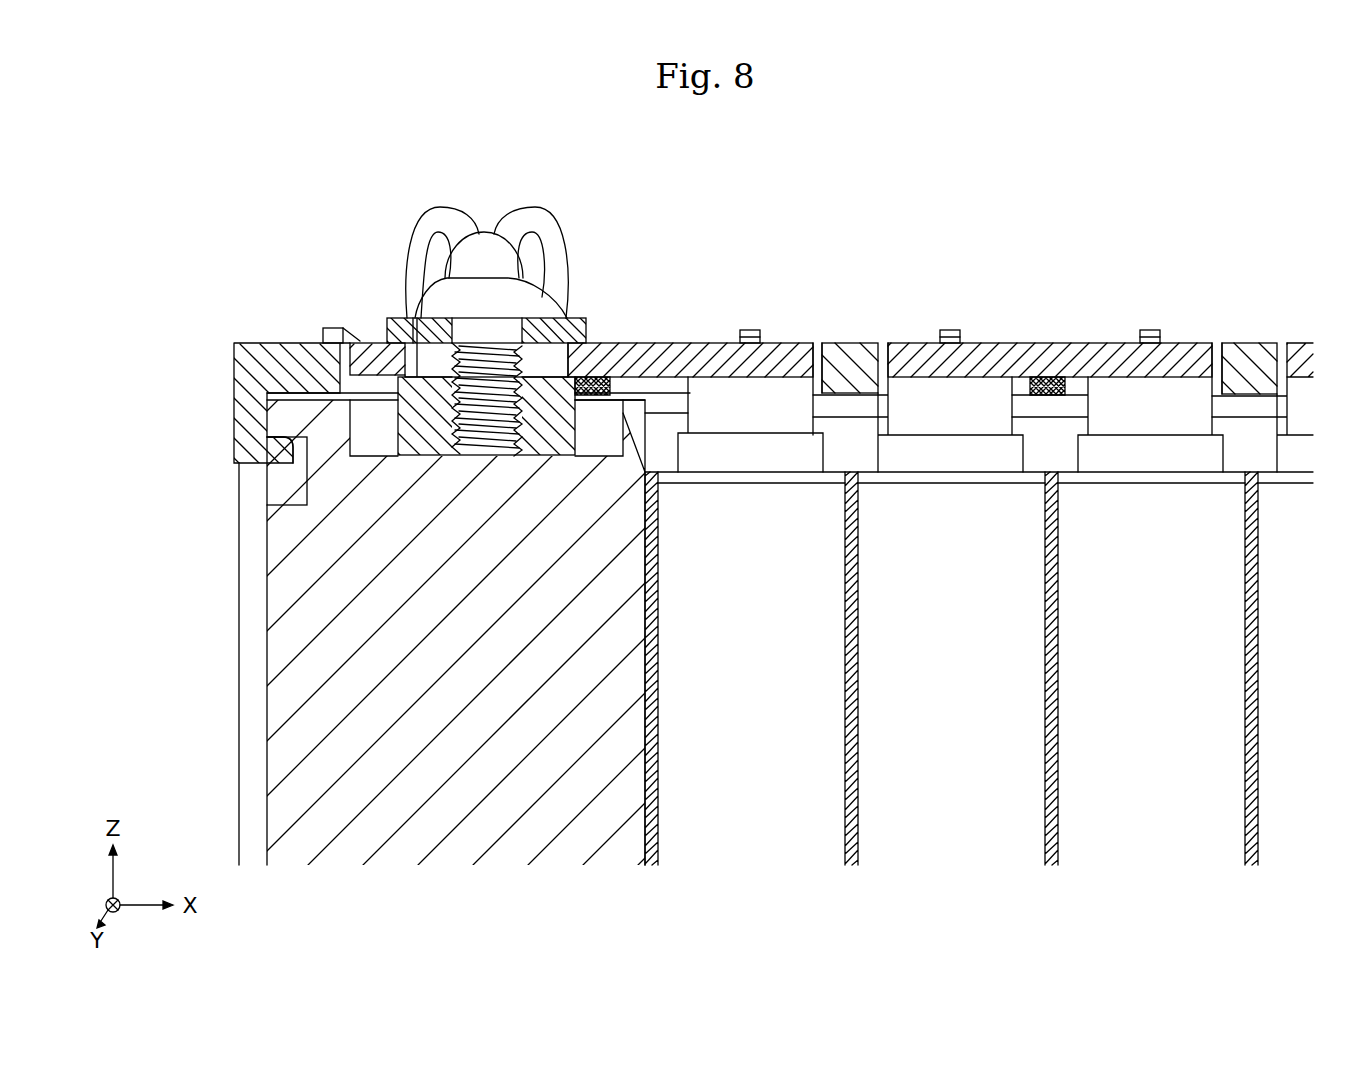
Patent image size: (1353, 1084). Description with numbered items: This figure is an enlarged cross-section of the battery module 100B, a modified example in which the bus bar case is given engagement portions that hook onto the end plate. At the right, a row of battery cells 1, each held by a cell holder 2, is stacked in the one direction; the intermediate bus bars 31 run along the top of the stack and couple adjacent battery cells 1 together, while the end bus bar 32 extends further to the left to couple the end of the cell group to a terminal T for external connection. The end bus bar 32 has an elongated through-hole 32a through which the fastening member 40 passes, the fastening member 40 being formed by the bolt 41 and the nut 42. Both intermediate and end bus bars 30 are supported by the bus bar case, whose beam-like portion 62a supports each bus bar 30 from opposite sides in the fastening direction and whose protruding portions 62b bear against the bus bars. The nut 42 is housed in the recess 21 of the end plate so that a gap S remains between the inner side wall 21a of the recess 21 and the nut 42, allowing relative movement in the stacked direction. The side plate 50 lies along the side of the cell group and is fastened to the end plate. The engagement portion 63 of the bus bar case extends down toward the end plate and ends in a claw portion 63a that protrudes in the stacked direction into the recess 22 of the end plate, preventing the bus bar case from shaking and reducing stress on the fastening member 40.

The battery module 100B is at (249, 198).
The battery cell 1 is at (741, 798).
The cell holder 2 is at (843, 810).
The recess 21 is at (480, 456).
The inner side wall 21a is at (352, 427).
The recess 22 is at (281, 490).
The bus bar 30 is at (940, 335).
The intermediate bus bar 31 is at (1038, 343).
The end bus bar 32 is at (792, 350).
The elongated through-hole 32a is at (565, 358).
The fastening member 40 is at (535, 236).
The bolt 41 is at (505, 290).
The nut 42 is at (434, 262).
The side plate 50 is at (240, 540).
The beam-like portion 62a is at (610, 385).
The protruding portion 62b is at (330, 328).
The engagement portion 63 is at (234, 418).
The claw portion 63a is at (285, 441).
The gap S is at (373, 441).
The terminal for external connection T is at (408, 318).